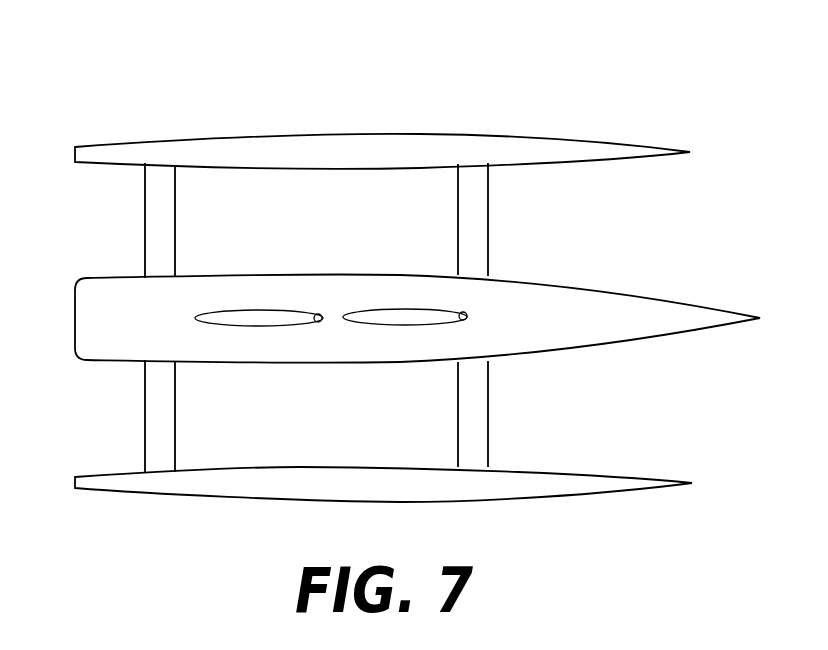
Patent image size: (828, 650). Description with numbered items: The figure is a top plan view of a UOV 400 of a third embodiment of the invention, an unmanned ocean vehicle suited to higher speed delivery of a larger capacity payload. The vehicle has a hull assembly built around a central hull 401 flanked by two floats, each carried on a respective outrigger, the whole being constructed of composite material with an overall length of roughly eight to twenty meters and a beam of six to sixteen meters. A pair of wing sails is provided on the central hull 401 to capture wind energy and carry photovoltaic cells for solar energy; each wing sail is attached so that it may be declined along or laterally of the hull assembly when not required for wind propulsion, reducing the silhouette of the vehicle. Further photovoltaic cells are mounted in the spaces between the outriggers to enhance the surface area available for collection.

The UOV 400 is at (138, 93).
The central hull 401 is at (568, 352).